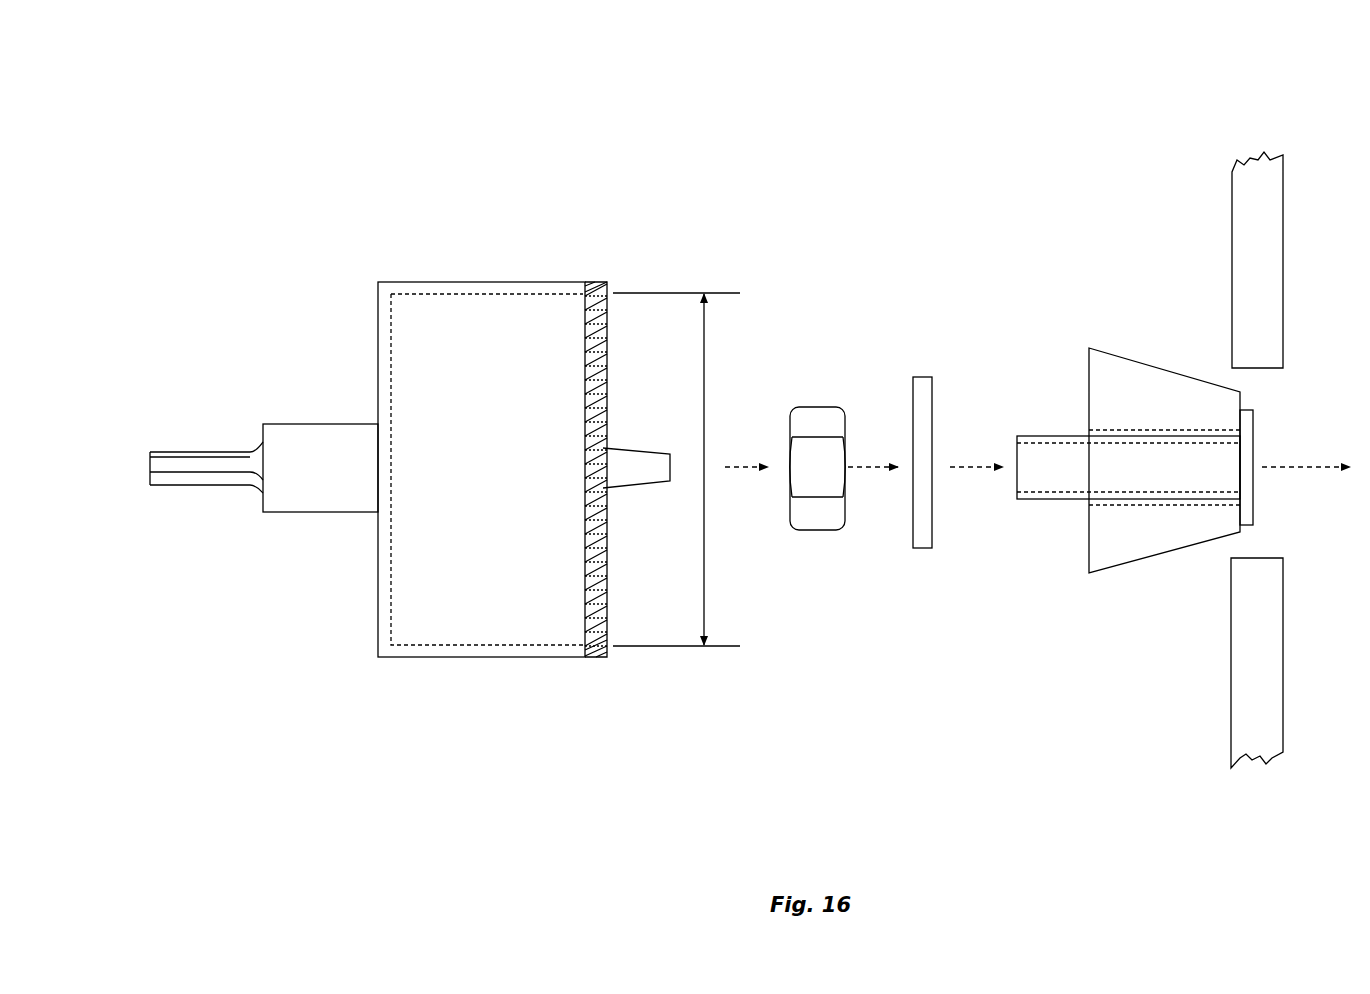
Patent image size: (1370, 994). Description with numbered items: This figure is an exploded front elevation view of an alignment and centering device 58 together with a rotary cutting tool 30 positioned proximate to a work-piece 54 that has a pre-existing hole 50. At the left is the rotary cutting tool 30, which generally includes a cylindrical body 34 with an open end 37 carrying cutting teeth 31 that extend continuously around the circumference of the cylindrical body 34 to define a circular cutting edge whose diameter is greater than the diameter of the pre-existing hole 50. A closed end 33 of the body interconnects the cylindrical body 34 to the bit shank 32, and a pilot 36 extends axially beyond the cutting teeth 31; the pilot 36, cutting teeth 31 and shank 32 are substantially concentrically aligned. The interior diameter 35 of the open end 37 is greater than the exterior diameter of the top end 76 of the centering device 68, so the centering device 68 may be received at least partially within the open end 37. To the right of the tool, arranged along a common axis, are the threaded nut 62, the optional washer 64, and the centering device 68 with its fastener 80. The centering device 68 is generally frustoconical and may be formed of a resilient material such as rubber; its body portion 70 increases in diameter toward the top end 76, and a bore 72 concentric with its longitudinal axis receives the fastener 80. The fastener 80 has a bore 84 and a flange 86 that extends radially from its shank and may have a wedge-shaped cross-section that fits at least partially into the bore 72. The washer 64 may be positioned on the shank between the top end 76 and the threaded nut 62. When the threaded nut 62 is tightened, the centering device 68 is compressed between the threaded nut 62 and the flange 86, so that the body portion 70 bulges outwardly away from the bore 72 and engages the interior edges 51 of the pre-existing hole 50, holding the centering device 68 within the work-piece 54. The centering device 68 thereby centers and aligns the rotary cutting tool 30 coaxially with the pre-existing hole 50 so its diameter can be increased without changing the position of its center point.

The alignment and centering device 58 is at (752, 83).
The rotary cutting tool 30 is at (487, 230).
The bit shank 32 is at (184, 462).
The closed end 33 is at (378, 370).
The cylindrical body 34 is at (488, 468).
The cutting teeth 31 is at (598, 312).
The pilot 36 is at (620, 463).
The open end 37 is at (622, 535).
The interior diameter 35 is at (706, 597).
The threaded nut 62 is at (812, 420).
The washer 64 is at (918, 396).
The centering device 68 is at (1086, 315).
The body portion 70 is at (1164, 460).
The bore 72 is at (1110, 430).
The top end 76 is at (1089, 393).
The fastener 80 is at (1056, 505).
The bore 84 is at (1128, 467).
The flange 86 is at (1253, 510).
The work-piece 54 is at (1247, 233).
The interior edges 51 is at (1258, 370).
The pre-existing hole 50 is at (1236, 542).